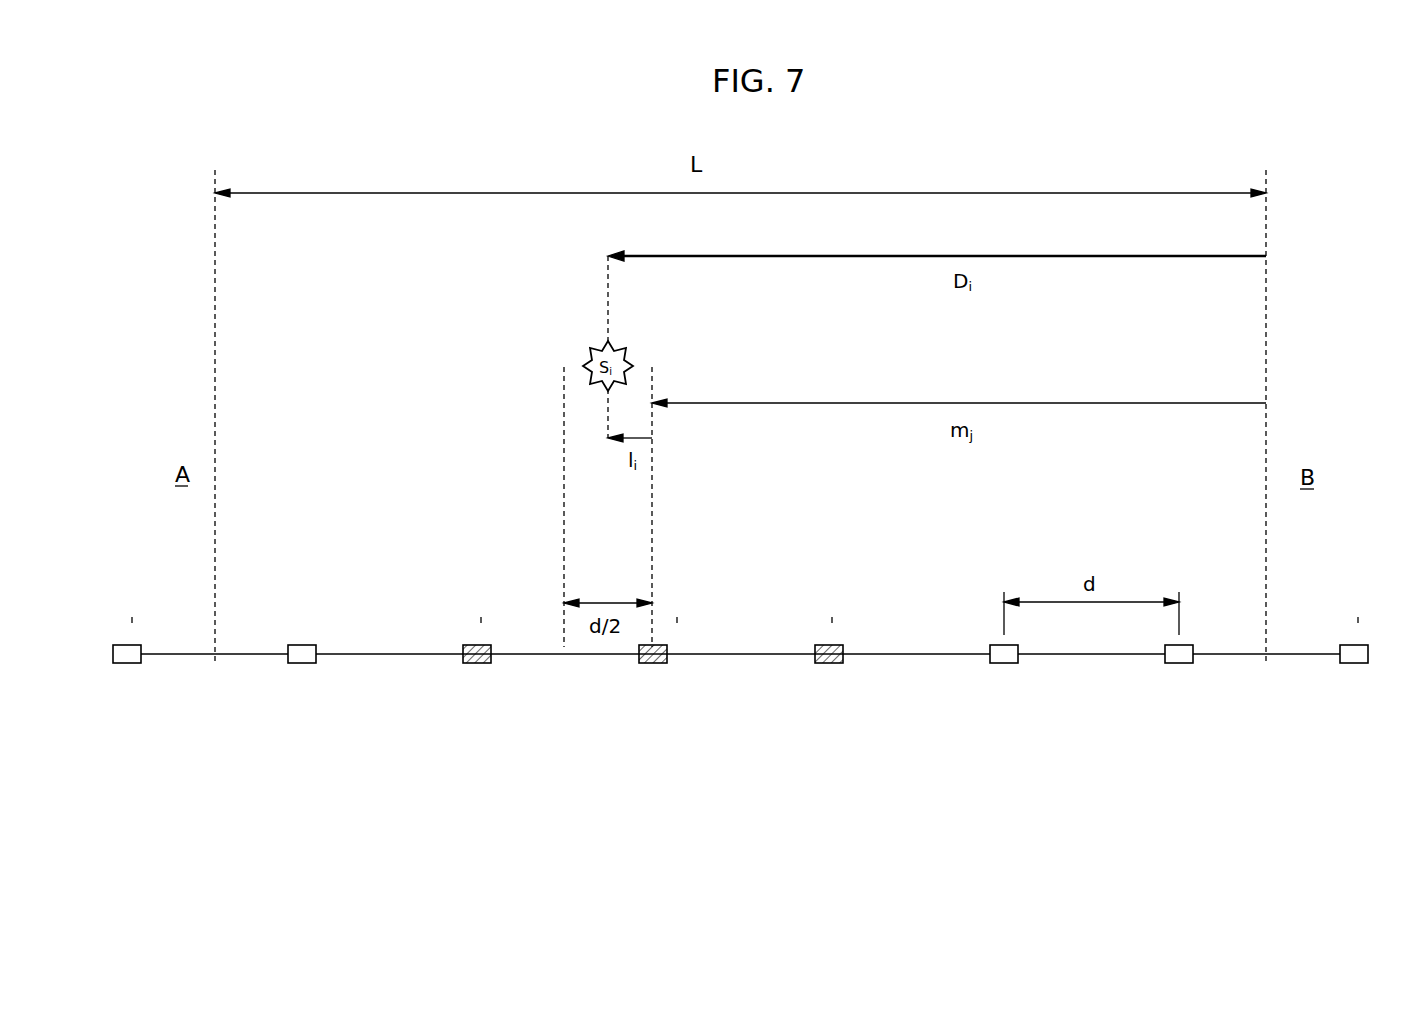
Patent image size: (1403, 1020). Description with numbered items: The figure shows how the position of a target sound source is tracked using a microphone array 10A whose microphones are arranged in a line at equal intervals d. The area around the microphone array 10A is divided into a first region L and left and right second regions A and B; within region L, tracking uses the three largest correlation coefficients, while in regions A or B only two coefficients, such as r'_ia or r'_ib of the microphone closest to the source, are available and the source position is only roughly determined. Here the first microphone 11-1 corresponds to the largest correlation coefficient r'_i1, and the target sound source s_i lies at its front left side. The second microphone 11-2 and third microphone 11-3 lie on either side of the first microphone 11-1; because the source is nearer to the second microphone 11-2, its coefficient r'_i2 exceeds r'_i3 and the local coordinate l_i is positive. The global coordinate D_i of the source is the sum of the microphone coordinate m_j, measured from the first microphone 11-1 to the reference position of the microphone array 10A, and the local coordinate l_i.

The microphone array 10A is at (898, 710).
The first microphone 11-1 is at (667, 663).
The second microphone 11-2 is at (473, 663).
The third microphone 11-3 is at (829, 663).